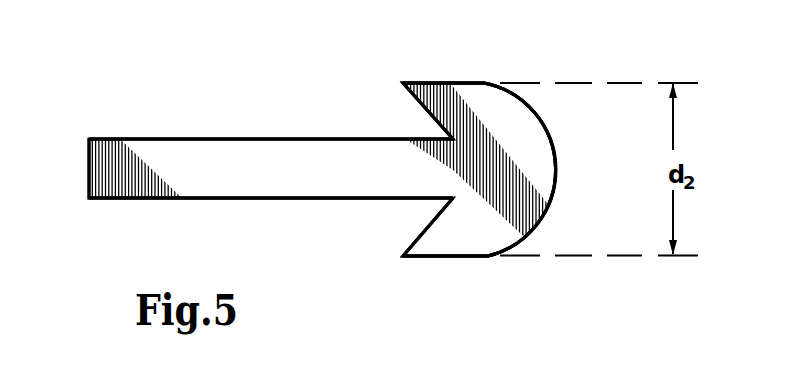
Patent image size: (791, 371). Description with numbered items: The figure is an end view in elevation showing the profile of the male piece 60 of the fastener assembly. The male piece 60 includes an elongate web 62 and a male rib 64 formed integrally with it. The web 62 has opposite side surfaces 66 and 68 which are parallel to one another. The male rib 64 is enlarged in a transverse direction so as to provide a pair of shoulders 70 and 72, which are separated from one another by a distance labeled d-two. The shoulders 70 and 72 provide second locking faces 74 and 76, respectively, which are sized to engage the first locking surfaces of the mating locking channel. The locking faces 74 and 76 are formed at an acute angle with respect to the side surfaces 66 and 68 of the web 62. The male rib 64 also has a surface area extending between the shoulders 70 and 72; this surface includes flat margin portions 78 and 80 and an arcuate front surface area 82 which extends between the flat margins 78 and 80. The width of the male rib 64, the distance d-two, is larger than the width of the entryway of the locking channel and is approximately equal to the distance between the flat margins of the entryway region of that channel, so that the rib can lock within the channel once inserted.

The male piece 60 is at (322, 138).
The elongate web 62 is at (195, 180).
The male rib 64 is at (527, 200).
The side surface 66 is at (177, 139).
The side surface 68 is at (265, 199).
The shoulder 70 is at (473, 103).
The shoulder 72 is at (440, 243).
The second locking face 74 is at (420, 103).
The second locking face 76 is at (420, 234).
The flat margin portion 78 is at (443, 83).
The flat margin portion 80 is at (463, 257).
The arcuate front surface area 82 is at (550, 137).